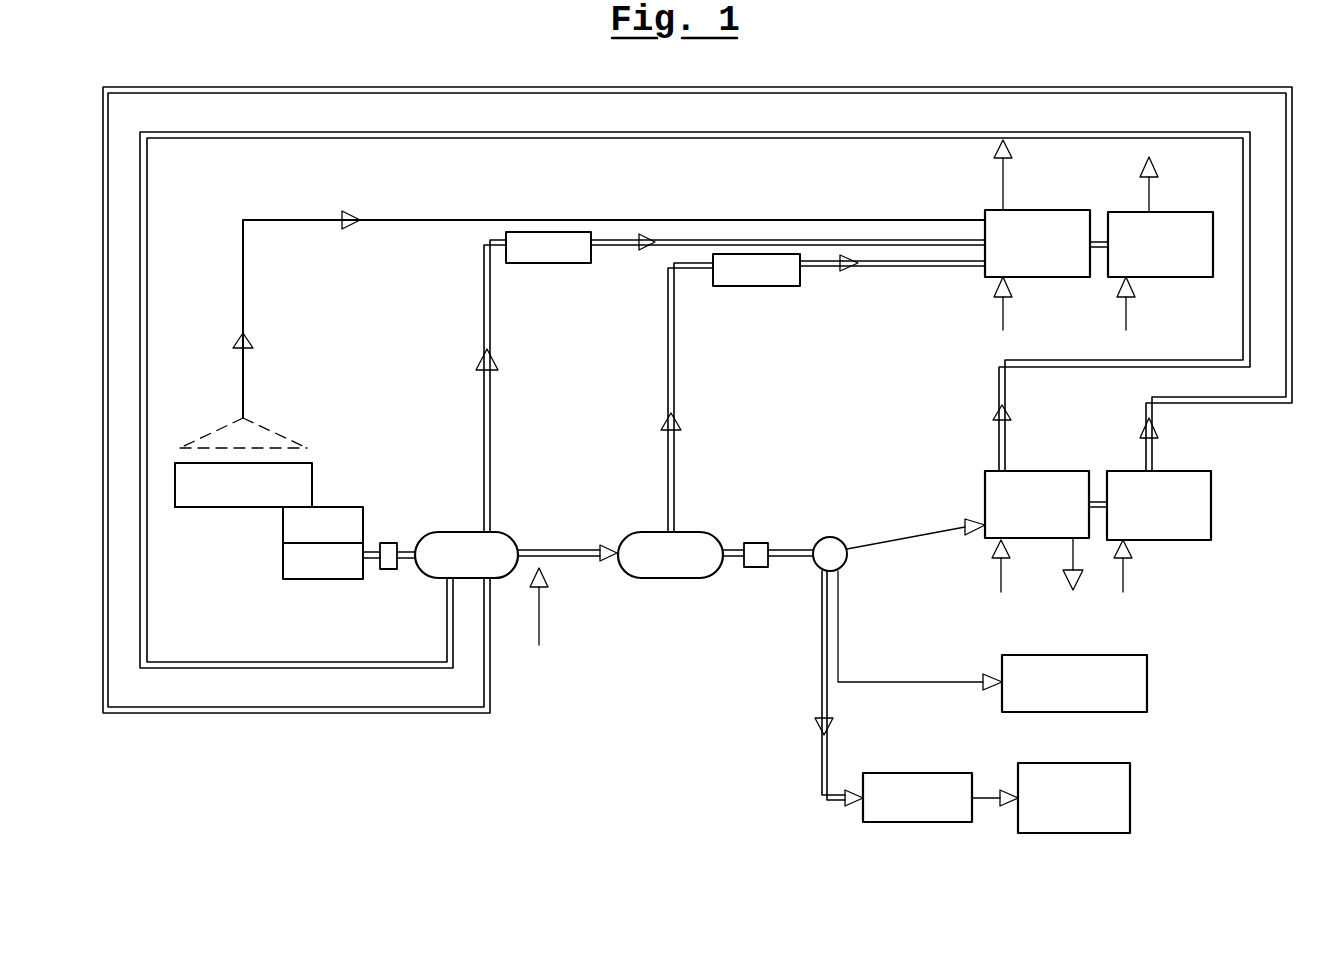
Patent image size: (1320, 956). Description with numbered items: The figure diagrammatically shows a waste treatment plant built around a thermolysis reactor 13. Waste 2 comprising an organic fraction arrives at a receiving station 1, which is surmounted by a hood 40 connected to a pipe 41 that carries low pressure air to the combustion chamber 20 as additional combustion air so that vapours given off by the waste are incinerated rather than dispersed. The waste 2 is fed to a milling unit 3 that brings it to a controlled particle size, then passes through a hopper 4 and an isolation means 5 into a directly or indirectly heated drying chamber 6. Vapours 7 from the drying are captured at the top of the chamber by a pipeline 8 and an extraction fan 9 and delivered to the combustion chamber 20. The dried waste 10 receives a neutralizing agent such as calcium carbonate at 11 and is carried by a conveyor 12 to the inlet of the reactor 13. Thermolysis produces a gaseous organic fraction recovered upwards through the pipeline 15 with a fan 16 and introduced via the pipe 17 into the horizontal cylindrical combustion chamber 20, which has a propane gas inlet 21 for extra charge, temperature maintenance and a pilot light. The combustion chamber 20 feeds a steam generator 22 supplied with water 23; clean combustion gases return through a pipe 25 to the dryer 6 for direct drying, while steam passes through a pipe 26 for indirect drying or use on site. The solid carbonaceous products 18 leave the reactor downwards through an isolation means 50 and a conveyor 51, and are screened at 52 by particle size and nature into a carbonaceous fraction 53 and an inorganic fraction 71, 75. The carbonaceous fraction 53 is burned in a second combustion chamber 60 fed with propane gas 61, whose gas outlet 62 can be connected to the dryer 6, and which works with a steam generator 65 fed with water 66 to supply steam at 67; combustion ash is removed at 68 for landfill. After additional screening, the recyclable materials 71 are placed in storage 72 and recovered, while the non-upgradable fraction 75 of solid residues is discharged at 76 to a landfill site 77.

The receiving station 1 is at (190, 508).
The waste 2 is at (235, 487).
The milling unit 3 is at (337, 518).
The hopper 4 is at (290, 568).
The isolation means 5 is at (388, 568).
The drying chamber 6 is at (455, 540).
The vapours 7 is at (417, 422).
The pipeline 8 is at (490, 418).
The extraction fan 9 is at (562, 250).
The dried waste 10 is at (572, 487).
The neutralizing agent addition point 11 is at (539, 630).
The conveyor 12 is at (570, 560).
The reactor 13 is at (677, 560).
The pipeline 15 is at (674, 445).
The fan 16 is at (735, 275).
The pipe 17 is at (858, 268).
The solid carbonaceous products 18 is at (735, 560).
The combustion chamber 20 is at (1055, 265).
The propane gas inlet 21 is at (1003, 315).
The steam generator 22 is at (1185, 212).
The water 23 is at (1126, 320).
The pipe 25 is at (1003, 172).
The pipe 26 is at (1149, 196).
The hood 40 is at (265, 432).
The pipe 41 is at (282, 218).
The isolation means 50 is at (748, 538).
The conveyor 51 is at (793, 547).
The screening 52 is at (835, 545).
The carbonaceous fraction 53 is at (907, 528).
The second combustion chamber 60 is at (990, 482).
The propane gas 61 is at (1001, 577).
The gas outlet 62 is at (1000, 425).
The steam generator 65 is at (1200, 485).
The water 66 is at (1123, 580).
The steam outlet 67 is at (1147, 452).
The combustion ash removal 68 is at (1060, 580).
The recyclable materials 71 is at (920, 680).
The storage 72 is at (1140, 672).
The non-upgradable fraction 75 is at (822, 682).
The discharge 76 is at (905, 790).
The landfill site 77 is at (1118, 785).